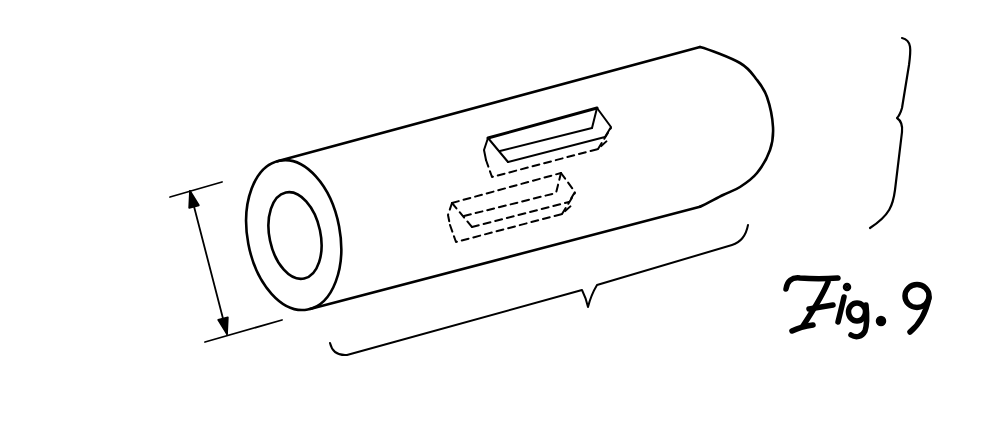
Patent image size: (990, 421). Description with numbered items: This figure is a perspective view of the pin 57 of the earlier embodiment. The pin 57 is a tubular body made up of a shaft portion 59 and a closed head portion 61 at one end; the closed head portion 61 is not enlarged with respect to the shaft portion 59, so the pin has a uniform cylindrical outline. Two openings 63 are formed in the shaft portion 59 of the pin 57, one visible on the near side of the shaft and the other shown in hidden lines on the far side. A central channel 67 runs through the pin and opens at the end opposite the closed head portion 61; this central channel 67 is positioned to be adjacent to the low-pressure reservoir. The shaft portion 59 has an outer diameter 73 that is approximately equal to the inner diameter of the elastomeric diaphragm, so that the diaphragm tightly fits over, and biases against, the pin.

The pin 57 is at (913, 133).
The shaft portion 59 is at (539, 290).
The closed head portion 61 is at (752, 70).
The openings 63 is at (543, 137).
The central channel 67 is at (290, 213).
The outer diameter 73 is at (205, 258).